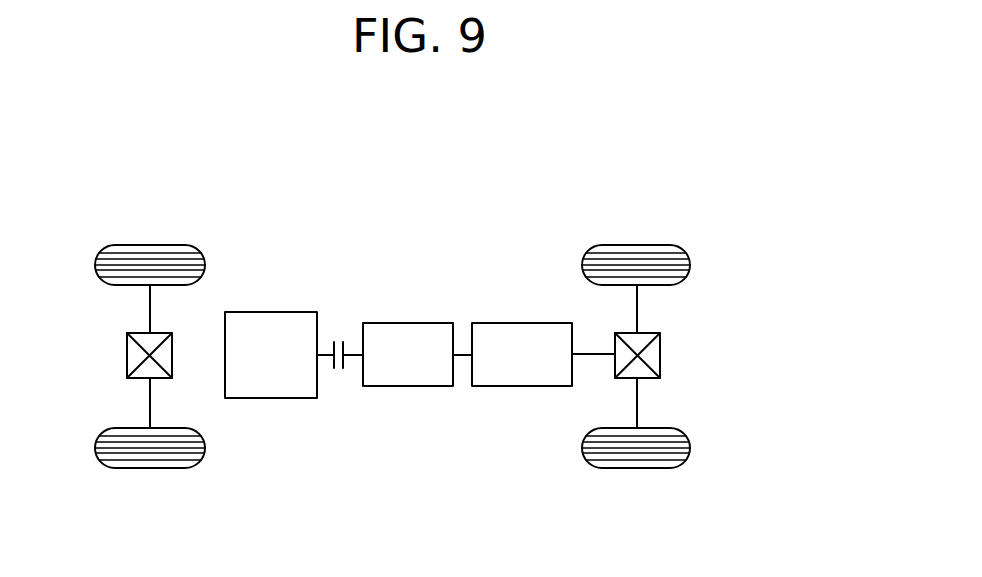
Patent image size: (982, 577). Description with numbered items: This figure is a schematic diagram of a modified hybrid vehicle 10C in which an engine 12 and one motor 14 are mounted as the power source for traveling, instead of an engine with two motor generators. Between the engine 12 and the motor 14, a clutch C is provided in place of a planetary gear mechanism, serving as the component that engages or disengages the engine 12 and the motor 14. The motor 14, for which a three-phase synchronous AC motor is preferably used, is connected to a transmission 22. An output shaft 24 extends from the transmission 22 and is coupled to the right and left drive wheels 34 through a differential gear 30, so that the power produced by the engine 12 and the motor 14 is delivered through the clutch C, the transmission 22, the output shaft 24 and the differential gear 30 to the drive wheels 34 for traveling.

The hybrid vehicle 10C is at (472, 177).
The engine 12 is at (272, 312).
The clutch C is at (334, 340).
The motor 14 is at (411, 323).
The transmission 22 is at (522, 323).
The output shaft 24 is at (586, 352).
The differential gear 30 is at (660, 354).
The drive wheels 34 is at (642, 245).